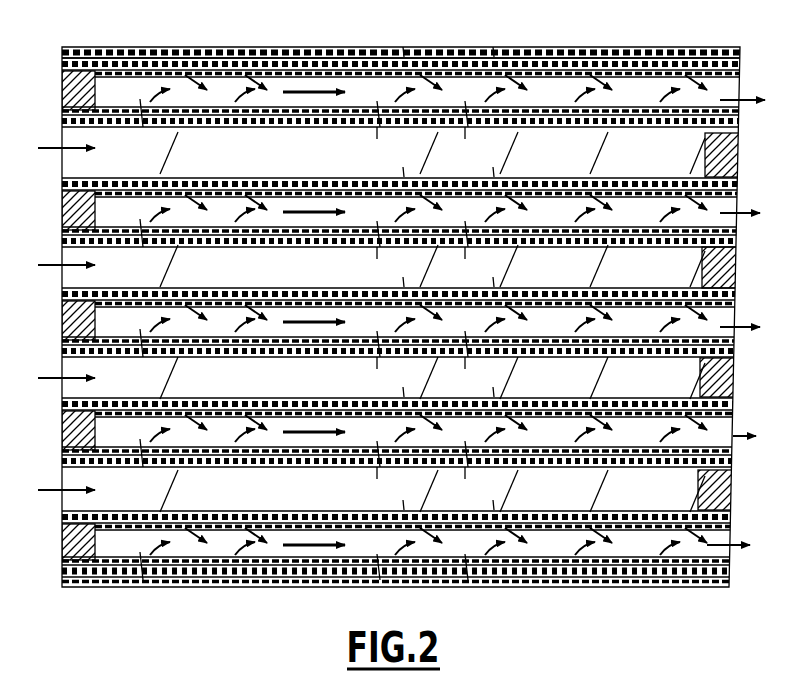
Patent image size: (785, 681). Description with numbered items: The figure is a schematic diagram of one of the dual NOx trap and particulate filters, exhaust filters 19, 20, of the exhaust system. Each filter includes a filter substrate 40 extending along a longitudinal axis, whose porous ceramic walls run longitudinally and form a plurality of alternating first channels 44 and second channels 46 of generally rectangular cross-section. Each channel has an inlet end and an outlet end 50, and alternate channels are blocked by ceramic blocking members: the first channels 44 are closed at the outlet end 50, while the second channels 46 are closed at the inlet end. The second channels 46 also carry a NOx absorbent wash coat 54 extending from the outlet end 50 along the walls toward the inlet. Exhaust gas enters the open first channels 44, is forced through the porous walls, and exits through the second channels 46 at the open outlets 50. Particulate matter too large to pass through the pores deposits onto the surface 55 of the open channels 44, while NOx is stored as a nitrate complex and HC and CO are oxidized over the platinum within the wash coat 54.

The exhaust filter 19 is at (576, 43).
The exhaust filter 20 is at (401, 298).
The filter substrate 40 is at (240, 48).
The first channels 44 is at (68, 166).
The second channels 46 is at (172, 48).
The outlet end 50 is at (738, 108).
The NOx absorbent wash coat 54 is at (470, 107).
The surface 55 is at (173, 130).